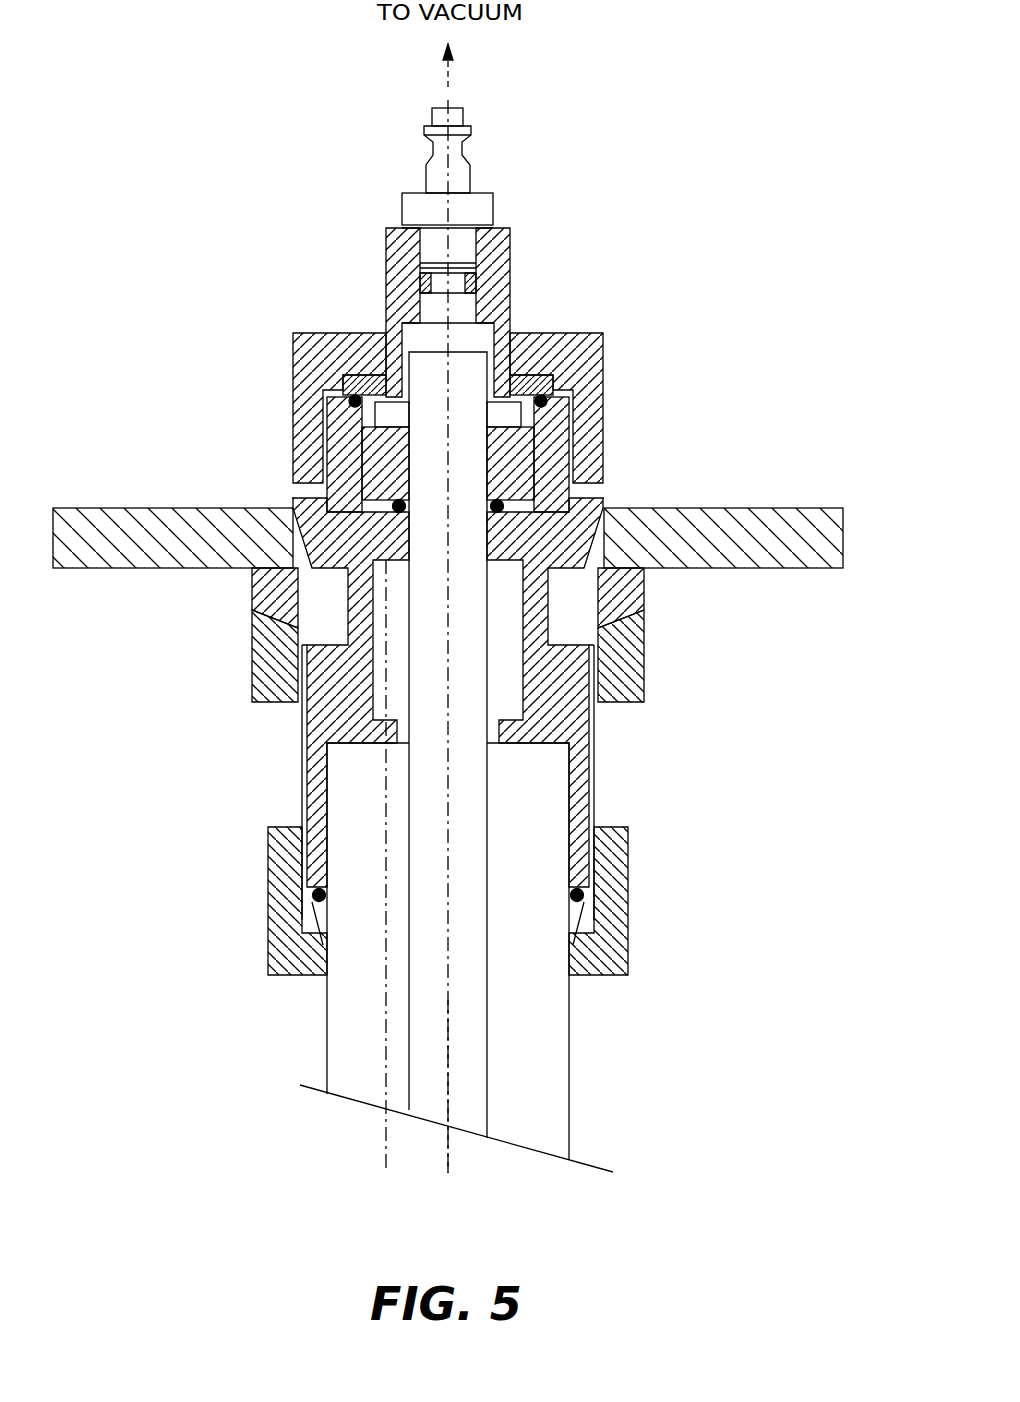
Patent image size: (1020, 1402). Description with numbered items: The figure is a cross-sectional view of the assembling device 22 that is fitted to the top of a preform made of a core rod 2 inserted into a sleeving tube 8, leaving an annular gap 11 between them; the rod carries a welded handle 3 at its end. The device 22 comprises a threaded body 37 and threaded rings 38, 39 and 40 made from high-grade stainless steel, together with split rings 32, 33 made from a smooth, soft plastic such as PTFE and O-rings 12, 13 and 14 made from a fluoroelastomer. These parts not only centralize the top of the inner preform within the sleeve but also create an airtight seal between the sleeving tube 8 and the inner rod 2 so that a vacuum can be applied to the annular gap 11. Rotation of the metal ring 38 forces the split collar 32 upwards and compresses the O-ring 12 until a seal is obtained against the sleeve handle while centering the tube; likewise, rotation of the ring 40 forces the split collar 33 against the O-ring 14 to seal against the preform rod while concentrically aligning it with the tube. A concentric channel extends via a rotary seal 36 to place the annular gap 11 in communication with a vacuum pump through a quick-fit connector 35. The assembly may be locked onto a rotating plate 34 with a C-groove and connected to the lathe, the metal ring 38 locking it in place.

The quick fit connector 35 is at (485, 208).
The welded handle 3 is at (426, 372).
The device 22 is at (293, 352).
The threaded ring 40 is at (597, 357).
The rotary seal 36 is at (558, 381).
The O-ring 14 is at (562, 392).
The O-ring 13 is at (505, 503).
The split ring 33 is at (495, 447).
The rotating plate 34 is at (792, 562).
The threaded ring 39 is at (645, 682).
The threaded body 37 is at (590, 775).
The metal ring 38 is at (622, 845).
The O-ring 12 is at (598, 934).
The split ring 32 is at (587, 901).
The core rod 2 is at (477, 1100).
The sleeving tube 8 is at (562, 1128).
The annular gap 11 is at (410, 1070).